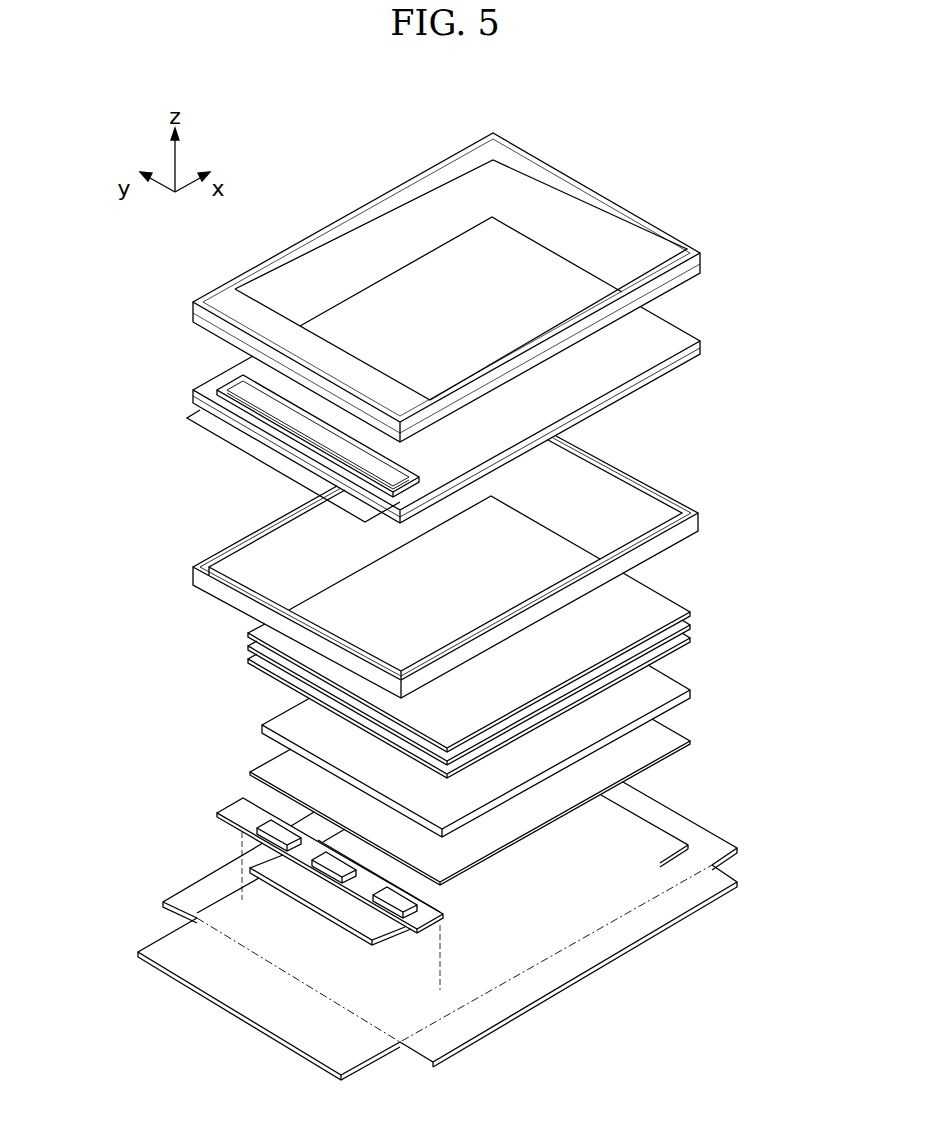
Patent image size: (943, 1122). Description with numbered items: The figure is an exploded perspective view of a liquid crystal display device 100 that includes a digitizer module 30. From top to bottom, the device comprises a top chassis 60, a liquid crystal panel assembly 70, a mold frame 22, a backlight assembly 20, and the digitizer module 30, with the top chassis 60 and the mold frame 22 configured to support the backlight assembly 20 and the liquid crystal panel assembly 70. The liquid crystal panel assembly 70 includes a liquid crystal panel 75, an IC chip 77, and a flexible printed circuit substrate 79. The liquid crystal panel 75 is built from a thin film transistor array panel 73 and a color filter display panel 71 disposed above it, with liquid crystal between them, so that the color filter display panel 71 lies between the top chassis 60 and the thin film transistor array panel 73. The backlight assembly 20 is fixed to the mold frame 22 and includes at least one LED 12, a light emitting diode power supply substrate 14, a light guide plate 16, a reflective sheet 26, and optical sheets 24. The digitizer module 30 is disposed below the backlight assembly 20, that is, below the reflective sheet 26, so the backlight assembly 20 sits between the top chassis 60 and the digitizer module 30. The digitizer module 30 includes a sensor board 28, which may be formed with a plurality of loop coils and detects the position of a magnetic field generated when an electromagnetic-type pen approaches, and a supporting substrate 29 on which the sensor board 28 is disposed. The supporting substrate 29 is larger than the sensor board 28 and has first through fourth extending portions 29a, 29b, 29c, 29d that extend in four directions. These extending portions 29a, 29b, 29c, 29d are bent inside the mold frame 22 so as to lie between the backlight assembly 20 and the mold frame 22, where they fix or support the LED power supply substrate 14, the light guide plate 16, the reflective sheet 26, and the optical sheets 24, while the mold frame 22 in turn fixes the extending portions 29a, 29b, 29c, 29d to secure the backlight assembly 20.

The liquid crystal display device 100 is at (382, 112).
The top chassis 60 is at (648, 222).
The liquid crystal panel 75 is at (535, 272).
The liquid crystal panel assembly 70 is at (190, 385).
The color filter display panel 71 is at (705, 331).
The thin film transistor array panel 73 is at (705, 348).
The IC chip 77 is at (225, 388).
The flexible printed circuit substrate 79 is at (200, 432).
The backlight assembly 20 is at (200, 638).
The mold frame 22 is at (705, 517).
The optical sheets 24 is at (239, 631).
The light guide plate 16 is at (262, 727).
The reflective sheet 26 is at (258, 767).
The light emitting diode power supply substrate 14 is at (232, 810).
The LED 12 is at (245, 822).
The digitizer module 30 is at (740, 948).
The sensor board 28 is at (583, 883).
The supporting substrate 29 is at (663, 893).
The first extending portion 29a is at (235, 995).
The second extending portion 29b is at (535, 995).
The third extending portion 29c is at (713, 842).
The fourth extending portion 29d is at (185, 900).